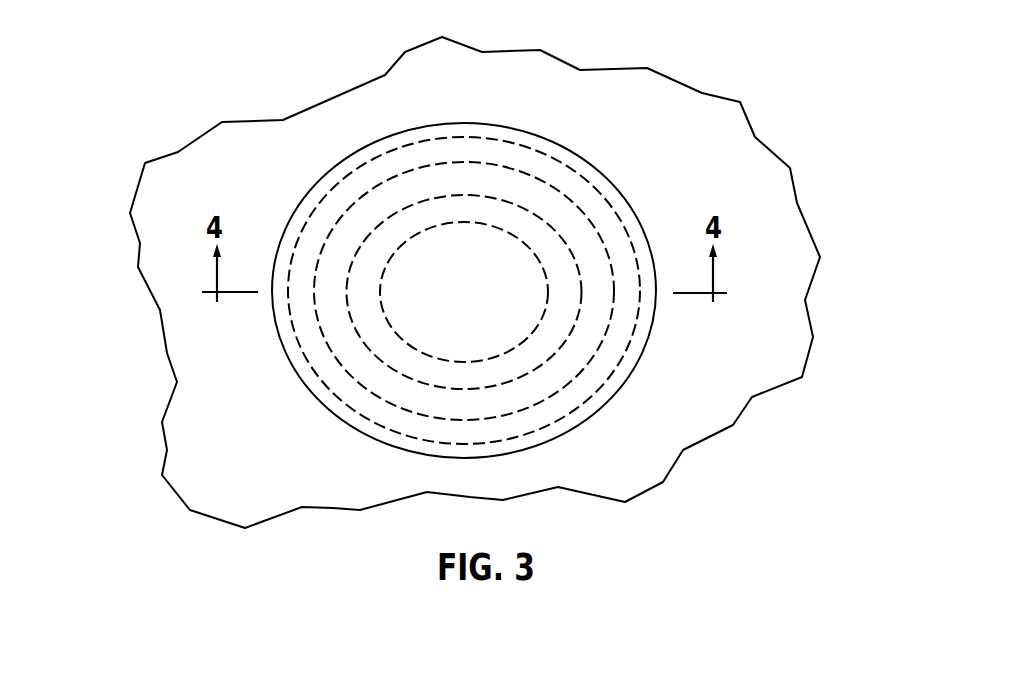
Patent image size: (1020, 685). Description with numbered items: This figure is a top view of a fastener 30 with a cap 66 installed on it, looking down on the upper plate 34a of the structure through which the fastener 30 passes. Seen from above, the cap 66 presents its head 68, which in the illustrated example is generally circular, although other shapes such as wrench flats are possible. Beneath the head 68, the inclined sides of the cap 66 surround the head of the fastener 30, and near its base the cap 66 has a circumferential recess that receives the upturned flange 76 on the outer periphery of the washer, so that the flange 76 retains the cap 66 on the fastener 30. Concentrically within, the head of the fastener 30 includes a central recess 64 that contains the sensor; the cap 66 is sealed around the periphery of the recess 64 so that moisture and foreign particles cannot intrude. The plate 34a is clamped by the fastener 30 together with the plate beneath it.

The plate 34a is at (253, 125).
The fastener 30 is at (377, 249).
The cap 66 is at (597, 137).
The central recess 64 is at (505, 259).
The upturned flange 76 is at (617, 238).
The head 68 is at (640, 338).